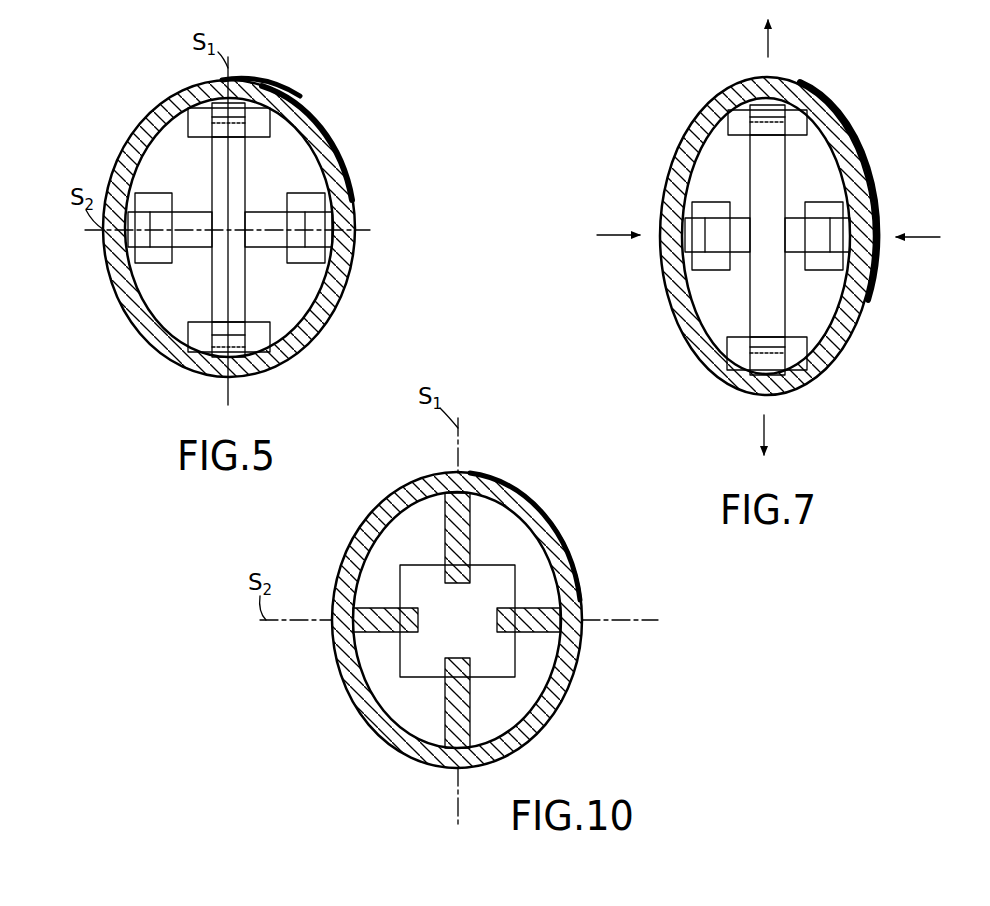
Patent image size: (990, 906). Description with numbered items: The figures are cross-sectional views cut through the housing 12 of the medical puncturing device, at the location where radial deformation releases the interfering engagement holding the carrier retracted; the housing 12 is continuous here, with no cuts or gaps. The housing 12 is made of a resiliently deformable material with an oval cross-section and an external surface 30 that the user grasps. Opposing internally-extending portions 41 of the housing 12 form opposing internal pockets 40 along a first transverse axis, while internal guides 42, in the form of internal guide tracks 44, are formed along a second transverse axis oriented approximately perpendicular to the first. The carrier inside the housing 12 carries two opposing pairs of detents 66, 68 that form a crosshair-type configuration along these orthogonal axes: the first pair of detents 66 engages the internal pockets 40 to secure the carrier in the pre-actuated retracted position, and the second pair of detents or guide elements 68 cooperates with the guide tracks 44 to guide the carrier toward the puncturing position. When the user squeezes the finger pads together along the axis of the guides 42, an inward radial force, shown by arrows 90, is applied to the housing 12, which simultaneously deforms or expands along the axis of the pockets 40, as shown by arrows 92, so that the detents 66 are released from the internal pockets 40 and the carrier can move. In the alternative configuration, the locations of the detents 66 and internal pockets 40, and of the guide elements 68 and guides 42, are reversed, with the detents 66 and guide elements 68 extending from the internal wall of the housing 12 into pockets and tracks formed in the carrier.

In FIG. 5, the housing 12 is at (150, 118).
In FIG. 7, the housing 12 is at (692, 122).
In FIG. 10, the housing 12 is at (404, 490).
In FIG. 5, the external surface 30 is at (332, 118).
In FIG. 7, the external surface 30 is at (855, 126).
In FIG. 10, the external surface 30 is at (564, 520).
In FIG. 5, the internal pockets 40 is at (240, 110).
In FIG. 7, the internal pockets 40 is at (774, 108).
In FIG. 10, the internal pockets 40 is at (458, 578).
In FIG. 5, the internally-extending portions 41 is at (276, 126).
In FIG. 7, the internally-extending portions 41 is at (812, 132).
In FIG. 5, the internal guides 42 is at (145, 185).
In FIG. 7, the internal guides 42 is at (712, 195).
In FIG. 10, the internal guides 42 is at (388, 600).
In FIG. 5, the guide tracks 44 is at (130, 280).
In FIG. 7, the guide tracks 44 is at (690, 262).
In FIG. 10, the guide tracks 44 is at (414, 610).
In FIG. 5, the first pair of detents 66 is at (215, 130).
In FIG. 7, the first pair of detents 66 is at (755, 130).
In FIG. 10, the first pair of detents 66 is at (455, 570).
In FIG. 5, the second pair of detents 68 is at (178, 222).
In FIG. 7, the second pair of detents 68 is at (727, 222).
In FIG. 10, the second pair of detents 68 is at (500, 624).
In FIG. 7, the arrows 90 is at (598, 235).
In FIG. 7, the arrows 92 is at (768, 57).